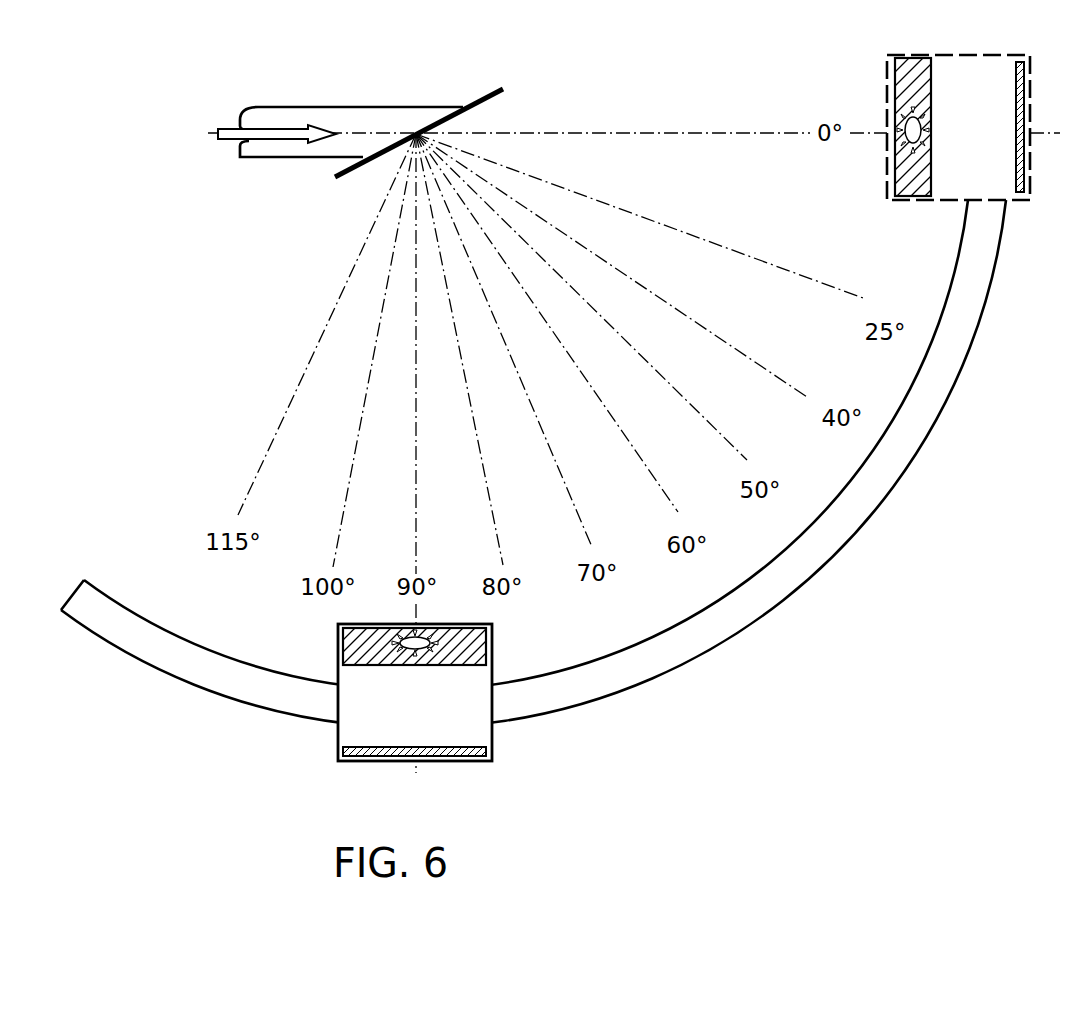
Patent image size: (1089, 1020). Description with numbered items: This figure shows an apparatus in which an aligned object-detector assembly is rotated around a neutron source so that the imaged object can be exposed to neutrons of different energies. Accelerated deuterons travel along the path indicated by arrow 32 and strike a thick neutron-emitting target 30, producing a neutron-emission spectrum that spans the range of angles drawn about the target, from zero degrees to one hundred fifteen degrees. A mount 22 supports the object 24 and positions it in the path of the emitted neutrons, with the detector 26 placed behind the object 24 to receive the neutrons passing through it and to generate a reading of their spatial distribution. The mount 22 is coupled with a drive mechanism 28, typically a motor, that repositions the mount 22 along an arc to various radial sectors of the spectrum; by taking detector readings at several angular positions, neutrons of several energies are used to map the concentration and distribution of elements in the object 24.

The mount 22 is at (336, 733).
The object 24 is at (482, 641).
The detector 26 is at (473, 754).
The drive mechanism 28 is at (157, 656).
The neutron-emitting target 30 is at (490, 90).
The arrow 32 is at (228, 139).